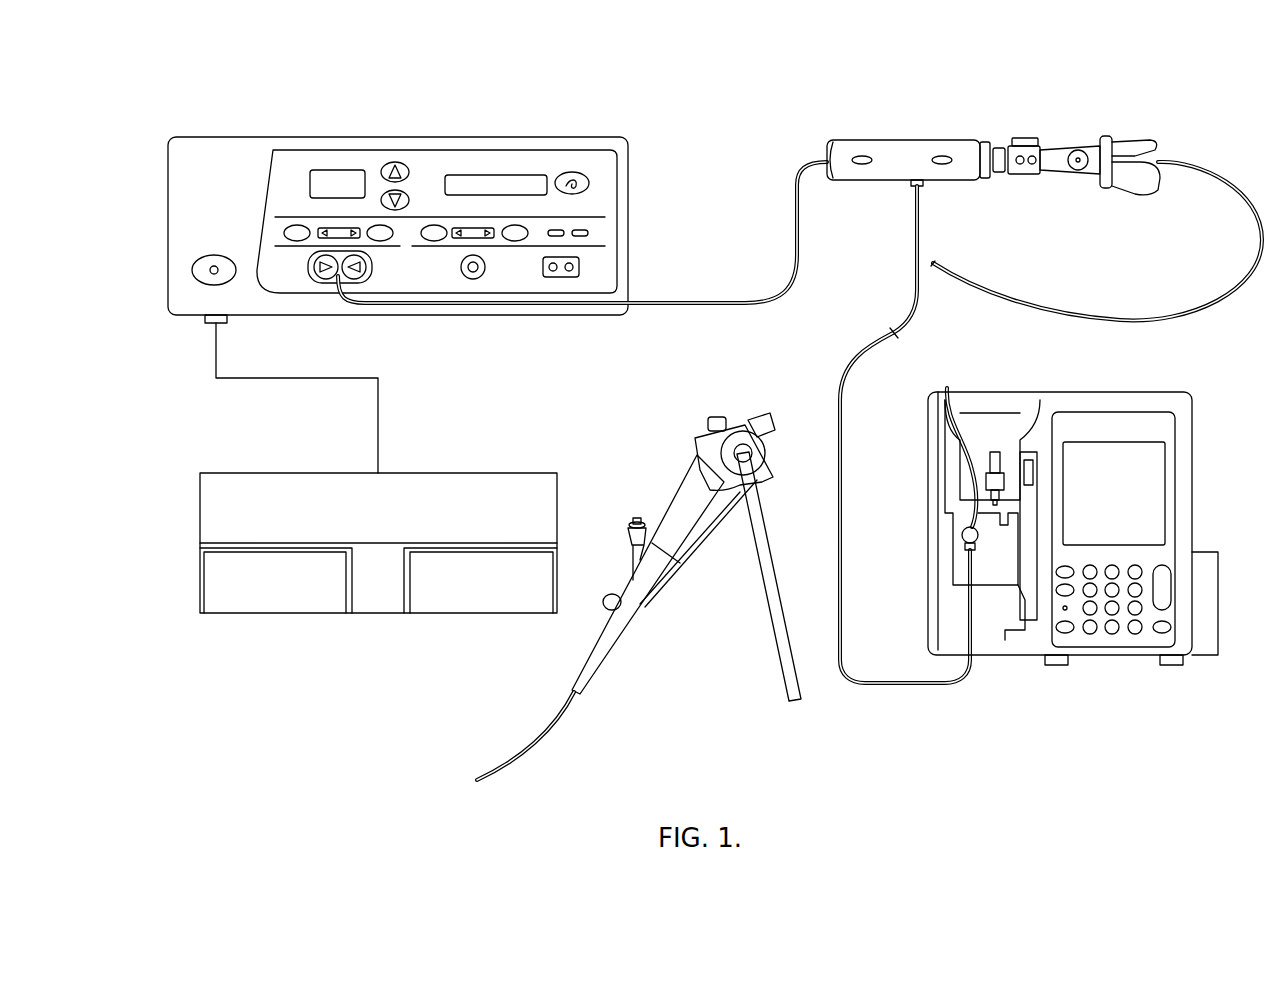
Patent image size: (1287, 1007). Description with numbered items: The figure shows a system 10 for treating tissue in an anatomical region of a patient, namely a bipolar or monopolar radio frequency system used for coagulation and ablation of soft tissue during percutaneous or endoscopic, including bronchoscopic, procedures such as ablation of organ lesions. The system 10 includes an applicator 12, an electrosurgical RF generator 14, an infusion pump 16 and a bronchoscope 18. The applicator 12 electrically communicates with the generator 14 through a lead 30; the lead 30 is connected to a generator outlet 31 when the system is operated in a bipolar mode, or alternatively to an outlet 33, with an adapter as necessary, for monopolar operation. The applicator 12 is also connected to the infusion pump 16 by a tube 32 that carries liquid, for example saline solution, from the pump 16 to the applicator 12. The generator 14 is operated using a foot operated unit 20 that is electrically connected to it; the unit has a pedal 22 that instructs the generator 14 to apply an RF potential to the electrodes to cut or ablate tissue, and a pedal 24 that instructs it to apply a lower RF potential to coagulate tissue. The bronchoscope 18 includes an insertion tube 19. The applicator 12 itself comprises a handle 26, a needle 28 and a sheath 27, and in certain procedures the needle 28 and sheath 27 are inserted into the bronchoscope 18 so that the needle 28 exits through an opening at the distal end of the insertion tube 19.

The system 10 is at (697, 93).
The applicator 12 is at (967, 118).
The electrosurgical RF generator 14 is at (403, 128).
The infusion pump 16 is at (903, 464).
The bronchoscope 18 is at (610, 655).
The insertion tube 19 is at (520, 748).
The foot operated unit 20 is at (310, 473).
The pedal 22 is at (265, 600).
The pedal 24 is at (478, 600).
The handle 26 is at (868, 182).
The sheath 27 is at (1218, 178).
The needle 28 is at (960, 266).
The lead 30 is at (693, 300).
The generator outlet 31 is at (332, 280).
The tube 32 is at (836, 400).
The outlet 33 is at (480, 280).